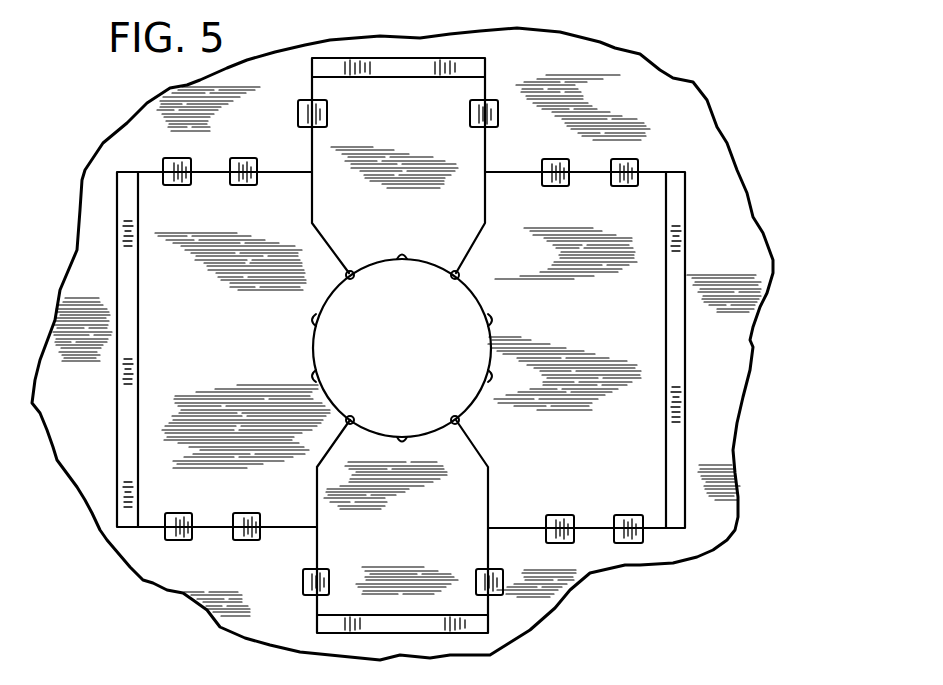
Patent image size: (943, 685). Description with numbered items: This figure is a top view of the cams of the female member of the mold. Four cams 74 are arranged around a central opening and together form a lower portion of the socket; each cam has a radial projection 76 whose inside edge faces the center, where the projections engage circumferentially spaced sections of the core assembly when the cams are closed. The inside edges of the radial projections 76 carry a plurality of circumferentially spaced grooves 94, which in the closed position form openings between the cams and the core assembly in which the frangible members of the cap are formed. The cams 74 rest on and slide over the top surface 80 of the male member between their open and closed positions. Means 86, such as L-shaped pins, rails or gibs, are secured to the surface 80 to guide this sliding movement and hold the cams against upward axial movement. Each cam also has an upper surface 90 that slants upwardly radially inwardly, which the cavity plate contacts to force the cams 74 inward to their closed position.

The cam 74 is at (410, 124).
The radial projection 76 is at (467, 297).
The top surface 80 is at (667, 111).
The guide means 86 is at (188, 158).
The upper surface 90 is at (472, 67).
The groove 94 is at (316, 320).